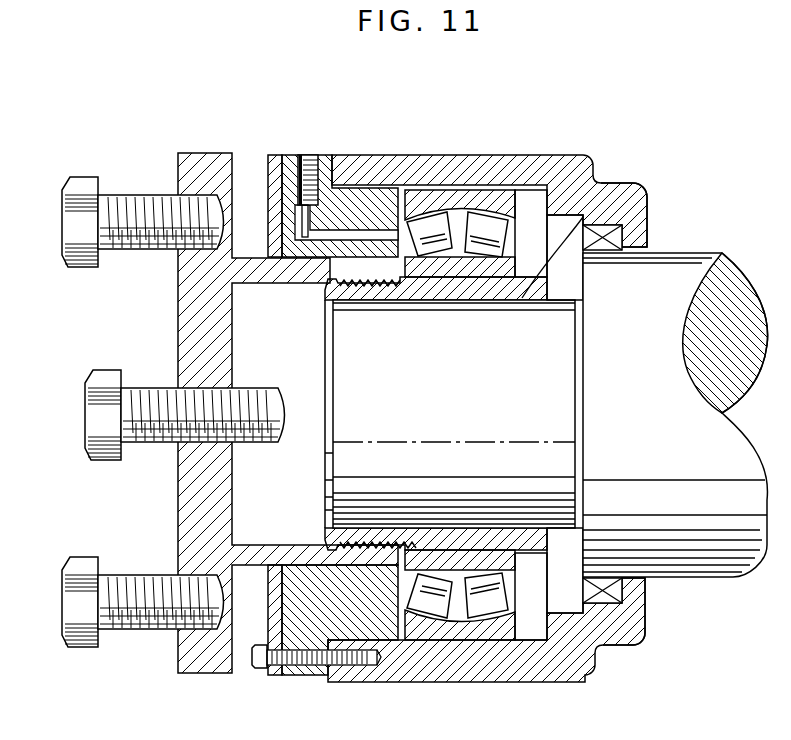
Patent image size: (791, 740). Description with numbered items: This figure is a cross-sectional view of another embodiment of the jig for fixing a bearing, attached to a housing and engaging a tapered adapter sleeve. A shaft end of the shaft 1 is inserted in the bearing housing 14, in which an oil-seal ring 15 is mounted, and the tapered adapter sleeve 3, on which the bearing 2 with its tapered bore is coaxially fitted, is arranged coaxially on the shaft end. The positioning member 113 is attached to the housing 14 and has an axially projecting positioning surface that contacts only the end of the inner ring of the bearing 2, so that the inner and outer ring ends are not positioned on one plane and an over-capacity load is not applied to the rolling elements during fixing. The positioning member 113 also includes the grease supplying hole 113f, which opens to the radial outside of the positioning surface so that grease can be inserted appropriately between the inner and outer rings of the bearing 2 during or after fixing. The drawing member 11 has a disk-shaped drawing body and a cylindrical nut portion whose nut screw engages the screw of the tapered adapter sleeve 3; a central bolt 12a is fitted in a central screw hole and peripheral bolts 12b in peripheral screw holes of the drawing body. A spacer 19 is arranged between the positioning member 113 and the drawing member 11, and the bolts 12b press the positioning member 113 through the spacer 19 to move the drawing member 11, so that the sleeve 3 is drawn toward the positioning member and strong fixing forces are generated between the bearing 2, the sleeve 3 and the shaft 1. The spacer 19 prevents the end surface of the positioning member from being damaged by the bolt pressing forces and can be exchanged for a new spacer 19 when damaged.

The shaft 1 is at (682, 253).
The bearing 2 is at (490, 197).
The tapered adapter sleeve 3 is at (603, 232).
The drawing member 11 is at (203, 152).
The central bolt 12a is at (107, 368).
The peripheral bolts 12b is at (83, 177).
The bearing housing 14 is at (395, 153).
The oil-seal ring 15 is at (602, 183).
The spacer 19 is at (270, 153).
The positioning member 113 is at (328, 153).
The grease supplying hole 113f is at (313, 153).